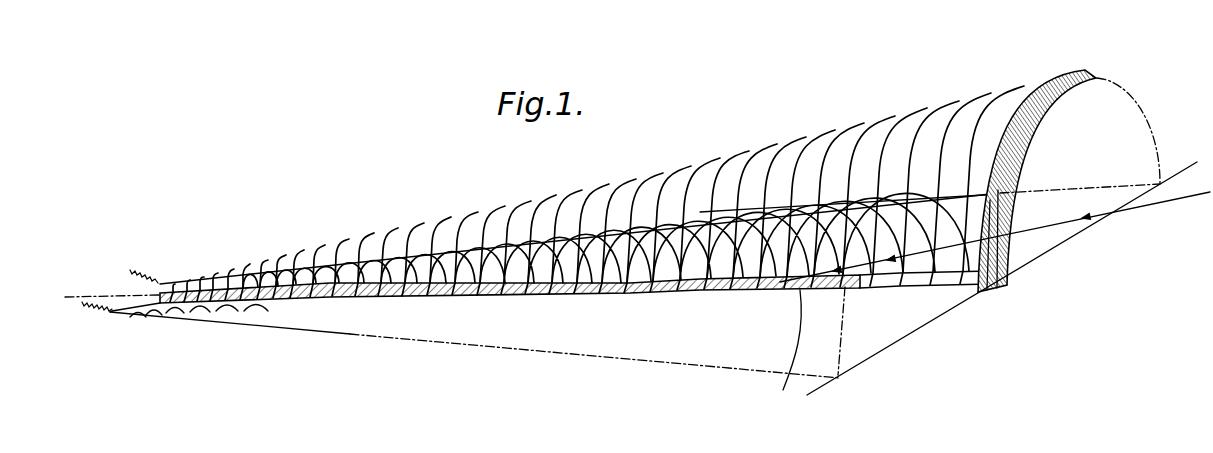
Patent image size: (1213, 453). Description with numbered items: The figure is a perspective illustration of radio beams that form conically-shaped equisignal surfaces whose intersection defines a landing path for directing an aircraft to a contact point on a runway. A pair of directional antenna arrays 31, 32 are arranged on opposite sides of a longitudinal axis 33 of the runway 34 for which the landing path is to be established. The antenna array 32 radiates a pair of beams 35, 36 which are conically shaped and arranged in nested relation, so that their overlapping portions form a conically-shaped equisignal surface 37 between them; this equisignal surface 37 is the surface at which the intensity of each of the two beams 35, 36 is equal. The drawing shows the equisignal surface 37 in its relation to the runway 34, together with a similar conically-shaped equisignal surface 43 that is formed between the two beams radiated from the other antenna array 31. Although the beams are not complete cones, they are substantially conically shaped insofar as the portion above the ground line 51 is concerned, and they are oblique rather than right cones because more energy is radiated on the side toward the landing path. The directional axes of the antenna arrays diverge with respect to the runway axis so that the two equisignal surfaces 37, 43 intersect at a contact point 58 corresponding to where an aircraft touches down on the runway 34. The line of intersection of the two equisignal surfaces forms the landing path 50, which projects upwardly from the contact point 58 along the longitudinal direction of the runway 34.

The directional antenna array 31 is at (95, 314).
The directional antenna array 32 is at (147, 268).
The longitudinal axis 33 is at (92, 295).
The runway 34 is at (183, 300).
The beam 35 is at (1075, 67).
The beam 36 is at (1095, 80).
The conically-shaped equisignal surface 37 is at (924, 110).
The conically-shaped equisignal surface 43 is at (550, 296).
The landing path 50 is at (1198, 199).
The ground line 51 is at (897, 341).
The contact point 58 is at (797, 349).